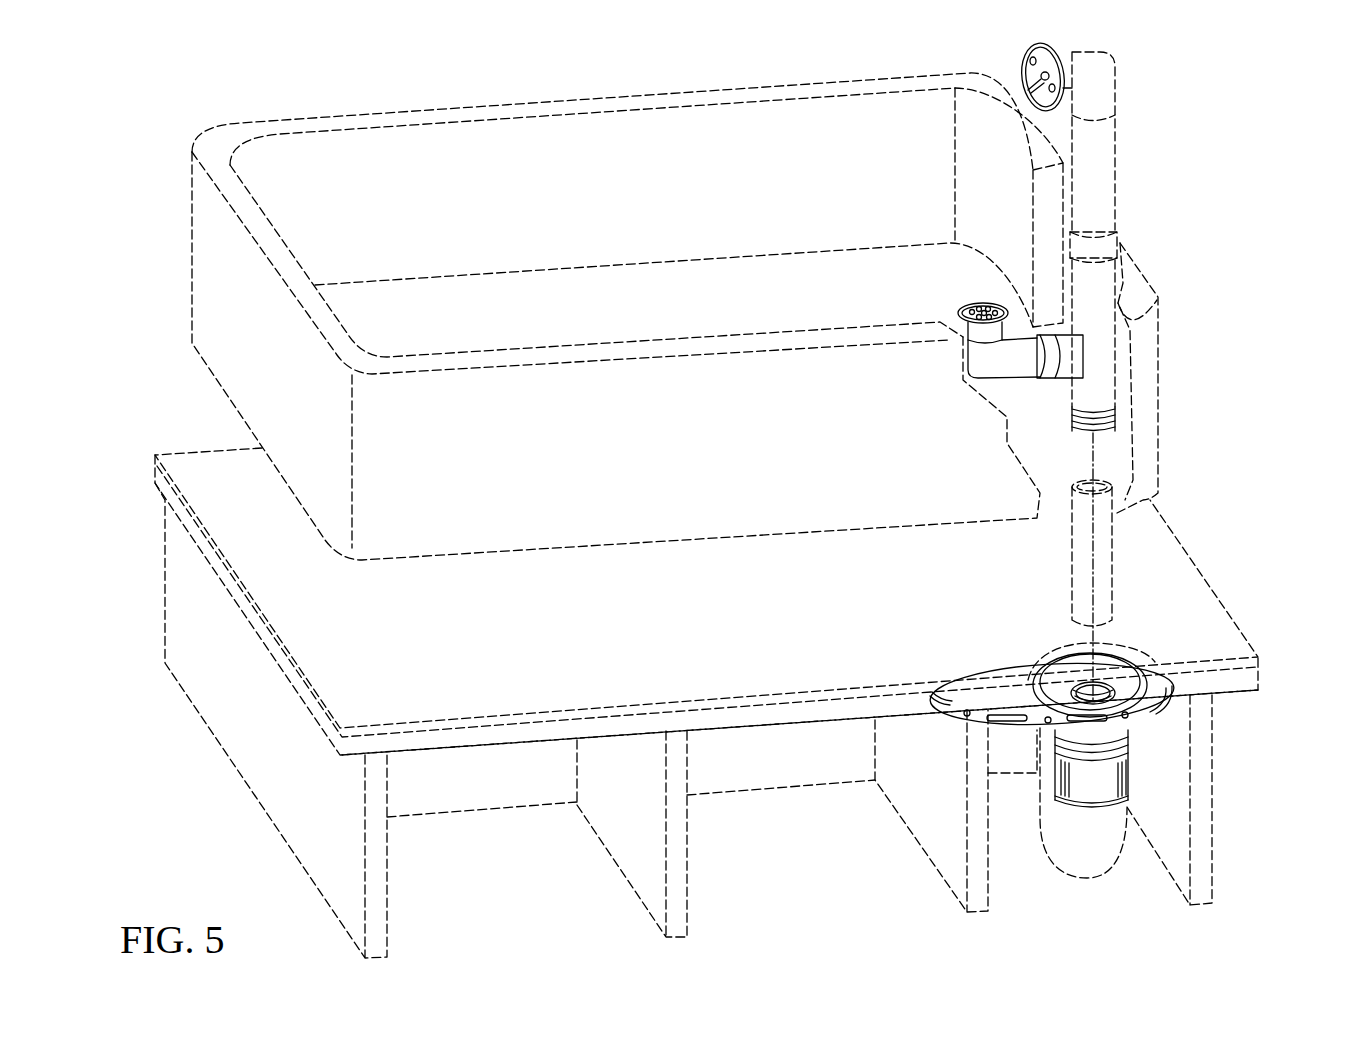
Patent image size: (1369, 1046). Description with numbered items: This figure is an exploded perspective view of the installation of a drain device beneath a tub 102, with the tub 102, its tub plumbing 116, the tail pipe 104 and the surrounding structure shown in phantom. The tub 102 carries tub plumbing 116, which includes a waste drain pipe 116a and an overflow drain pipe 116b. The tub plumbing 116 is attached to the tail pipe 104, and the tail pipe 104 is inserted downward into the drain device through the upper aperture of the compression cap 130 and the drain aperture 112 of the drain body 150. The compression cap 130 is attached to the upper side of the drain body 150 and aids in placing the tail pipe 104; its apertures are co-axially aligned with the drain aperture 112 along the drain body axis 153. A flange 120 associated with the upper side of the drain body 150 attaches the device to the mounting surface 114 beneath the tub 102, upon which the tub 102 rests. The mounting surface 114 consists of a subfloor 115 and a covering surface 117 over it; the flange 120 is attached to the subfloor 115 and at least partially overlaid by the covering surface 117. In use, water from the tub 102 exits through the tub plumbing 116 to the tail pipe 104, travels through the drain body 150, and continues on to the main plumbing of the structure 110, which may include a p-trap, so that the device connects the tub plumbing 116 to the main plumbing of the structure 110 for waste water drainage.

The tub 102 is at (305, 118).
The tail pipe 104 is at (1100, 567).
The main plumbing of the structure 110 is at (1067, 734).
The drain aperture 112 is at (1100, 690).
The mounting surface 114 is at (746, 703).
The subfloor 115 is at (1247, 687).
The tub plumbing 116 is at (1029, 236).
The waste drain pipe 116a is at (977, 358).
The overflow drain pipe 116b is at (1102, 94).
The covering surface 117 is at (1205, 645).
The flange 120 is at (987, 705).
The compression cap 130 is at (1057, 673).
The drain body 150 is at (1103, 730).
The drain body axis 153 is at (1093, 458).